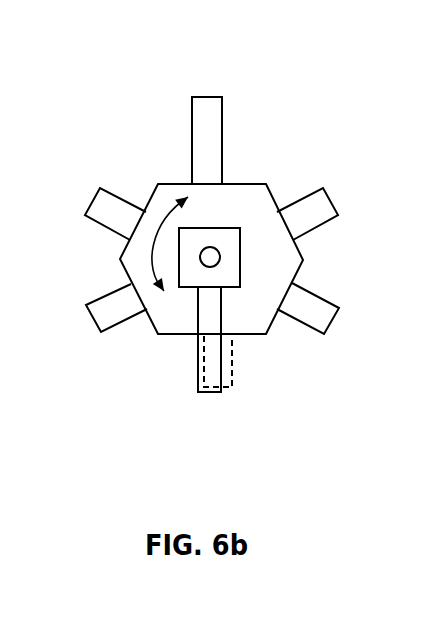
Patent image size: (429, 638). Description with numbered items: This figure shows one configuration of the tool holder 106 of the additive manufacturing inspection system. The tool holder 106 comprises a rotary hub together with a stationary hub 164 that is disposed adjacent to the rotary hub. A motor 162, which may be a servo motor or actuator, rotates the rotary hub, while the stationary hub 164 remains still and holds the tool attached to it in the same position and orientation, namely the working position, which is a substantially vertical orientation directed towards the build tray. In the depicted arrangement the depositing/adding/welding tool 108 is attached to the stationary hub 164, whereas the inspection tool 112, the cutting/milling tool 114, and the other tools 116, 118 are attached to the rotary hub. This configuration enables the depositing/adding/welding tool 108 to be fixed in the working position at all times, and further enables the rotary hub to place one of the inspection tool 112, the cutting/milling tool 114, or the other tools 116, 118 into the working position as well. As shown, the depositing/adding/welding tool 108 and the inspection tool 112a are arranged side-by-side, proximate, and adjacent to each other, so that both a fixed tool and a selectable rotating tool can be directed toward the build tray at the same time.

The tool holder 106 is at (80, 118).
The depositing/adding/welding tool 108 is at (199, 322).
The inspection tool 112 is at (93, 320).
The inspection tool 112a is at (232, 368).
The cutting/milling tool 114 is at (335, 320).
The other tool 116 is at (334, 198).
The other tool 118 is at (93, 204).
The motor 162 is at (213, 247).
The stationary hub 164 is at (240, 257).